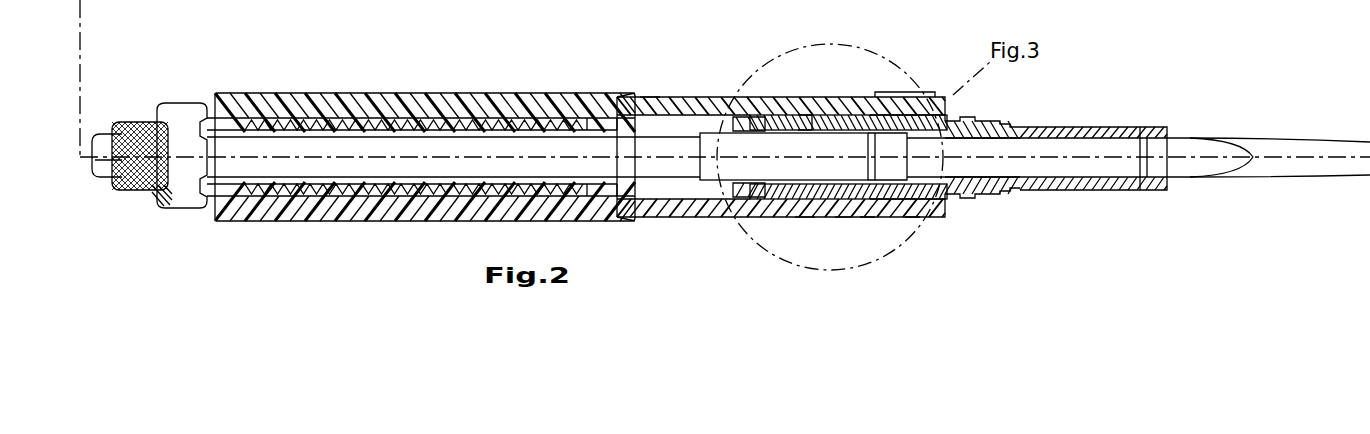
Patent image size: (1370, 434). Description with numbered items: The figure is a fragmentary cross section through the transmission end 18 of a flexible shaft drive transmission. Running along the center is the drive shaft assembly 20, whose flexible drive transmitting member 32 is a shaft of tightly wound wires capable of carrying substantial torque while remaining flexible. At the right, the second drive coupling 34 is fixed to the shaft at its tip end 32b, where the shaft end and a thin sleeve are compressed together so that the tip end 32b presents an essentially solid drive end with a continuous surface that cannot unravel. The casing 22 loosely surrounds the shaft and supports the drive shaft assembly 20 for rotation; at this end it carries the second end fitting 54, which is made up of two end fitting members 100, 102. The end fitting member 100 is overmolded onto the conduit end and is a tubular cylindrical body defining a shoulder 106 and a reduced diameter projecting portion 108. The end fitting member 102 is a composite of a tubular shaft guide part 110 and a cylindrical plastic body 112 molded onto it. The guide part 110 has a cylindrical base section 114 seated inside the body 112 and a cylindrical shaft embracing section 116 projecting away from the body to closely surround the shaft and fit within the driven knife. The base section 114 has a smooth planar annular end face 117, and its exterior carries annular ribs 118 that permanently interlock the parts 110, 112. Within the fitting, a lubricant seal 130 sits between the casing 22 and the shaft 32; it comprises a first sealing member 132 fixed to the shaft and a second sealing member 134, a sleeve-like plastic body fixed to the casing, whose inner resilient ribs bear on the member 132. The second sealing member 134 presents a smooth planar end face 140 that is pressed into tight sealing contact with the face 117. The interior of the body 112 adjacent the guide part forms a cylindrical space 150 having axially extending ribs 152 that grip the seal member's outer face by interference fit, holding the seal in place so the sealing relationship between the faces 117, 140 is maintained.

The second end 18 is at (1207, 258).
The drive shaft assembly 20 is at (598, 167).
The casing 22 is at (177, 88).
The drive transmitting member 32 is at (357, 216).
The tip end 32b is at (1287, 162).
The second drive coupling 34 is at (1280, 125).
The second end fitting 54 is at (650, 80).
The end fitting member 100 is at (445, 93).
The end fitting member 102 is at (693, 218).
The shoulder 106 is at (630, 96).
The reduced diameter projecting portion 108 is at (673, 96).
The shaft guide part 110 is at (1030, 205).
The cylindrical plastic body 112 is at (830, 218).
The cylindrical base section 114 is at (862, 99).
The shaft embracing section 116 is at (1038, 127).
The annular end face 117 is at (805, 99).
The annular ribs 118 is at (913, 220).
The lubricant seal 130 is at (805, 230).
The first sealing member 132 is at (845, 168).
The second sealing member 134 is at (807, 188).
The end face 140 is at (843, 218).
The cylindrical space 150 is at (740, 220).
The axially extending ribs 152 is at (746, 98).